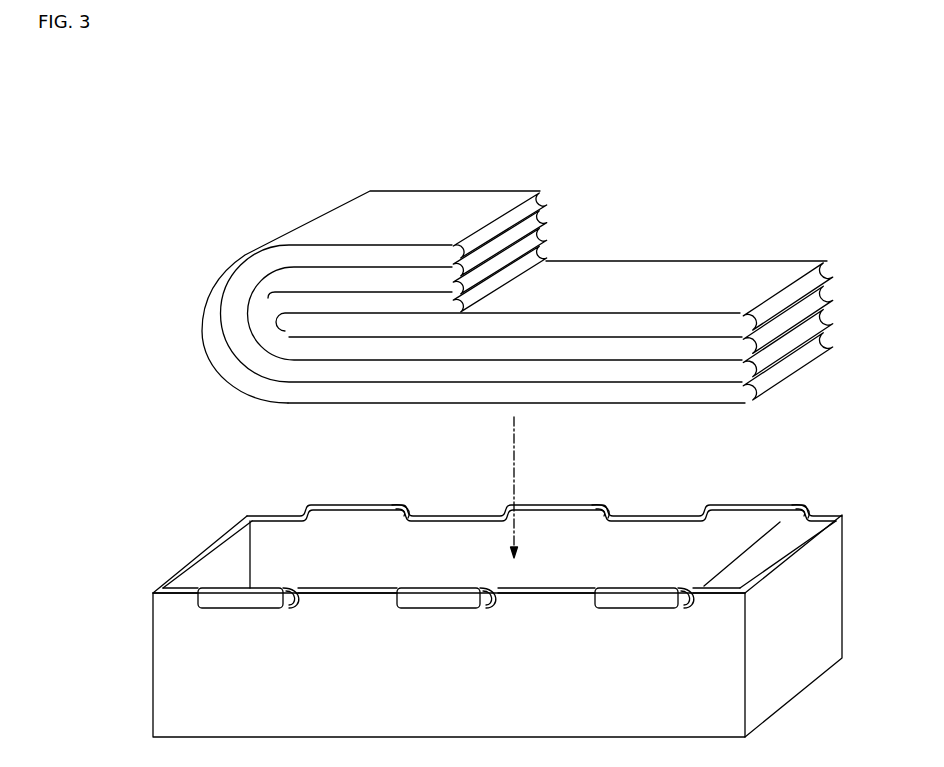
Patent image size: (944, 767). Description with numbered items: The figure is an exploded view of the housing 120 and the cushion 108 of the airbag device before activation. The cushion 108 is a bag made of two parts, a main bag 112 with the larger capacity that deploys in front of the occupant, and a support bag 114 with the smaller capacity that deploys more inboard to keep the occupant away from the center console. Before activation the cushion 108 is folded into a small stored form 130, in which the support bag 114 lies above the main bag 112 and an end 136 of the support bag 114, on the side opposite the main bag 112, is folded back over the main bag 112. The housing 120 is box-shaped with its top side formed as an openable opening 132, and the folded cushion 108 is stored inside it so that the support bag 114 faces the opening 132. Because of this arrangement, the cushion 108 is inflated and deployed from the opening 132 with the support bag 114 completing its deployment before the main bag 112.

The cushion 108 is at (660, 273).
The main bag 112 is at (640, 395).
The support bag 114 is at (419, 202).
The housing 120 is at (792, 680).
The stored form 130 is at (588, 260).
The opening 132 is at (703, 586).
The end of the support bag 136 is at (513, 215).